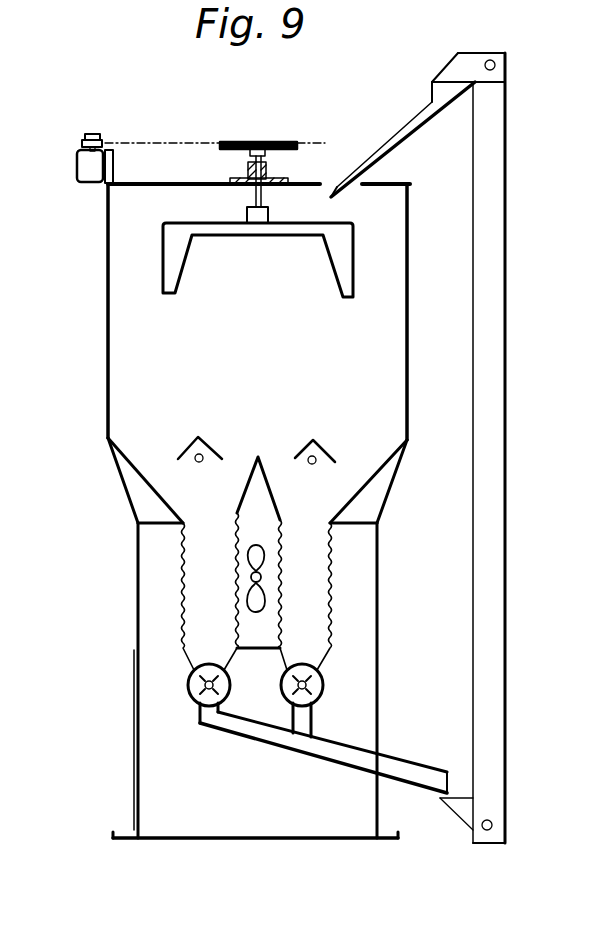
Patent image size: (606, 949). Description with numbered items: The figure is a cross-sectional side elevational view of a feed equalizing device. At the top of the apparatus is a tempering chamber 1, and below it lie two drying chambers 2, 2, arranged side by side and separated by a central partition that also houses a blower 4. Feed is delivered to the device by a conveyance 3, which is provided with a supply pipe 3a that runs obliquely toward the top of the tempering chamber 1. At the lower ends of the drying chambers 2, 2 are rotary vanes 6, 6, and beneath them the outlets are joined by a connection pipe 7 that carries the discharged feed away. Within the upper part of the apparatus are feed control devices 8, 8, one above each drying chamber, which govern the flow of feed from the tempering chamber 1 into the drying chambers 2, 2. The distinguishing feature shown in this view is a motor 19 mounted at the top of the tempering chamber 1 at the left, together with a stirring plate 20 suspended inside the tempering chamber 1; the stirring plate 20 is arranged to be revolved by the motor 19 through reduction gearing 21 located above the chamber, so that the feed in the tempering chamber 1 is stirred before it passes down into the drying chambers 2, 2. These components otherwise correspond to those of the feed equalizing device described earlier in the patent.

The tempering chamber 1 is at (133, 360).
The drying chambers 2 is at (207, 612).
The conveyance 3 is at (497, 330).
The supply pipe 3a is at (395, 140).
The blower 4 is at (251, 556).
The rotary vanes 6 is at (197, 691).
The connection pipe 7 is at (333, 762).
The feed control devices 8 is at (198, 437).
The motor 19 is at (85, 175).
The stirring plate 20 is at (345, 282).
The reduction gearing 21 is at (177, 142).